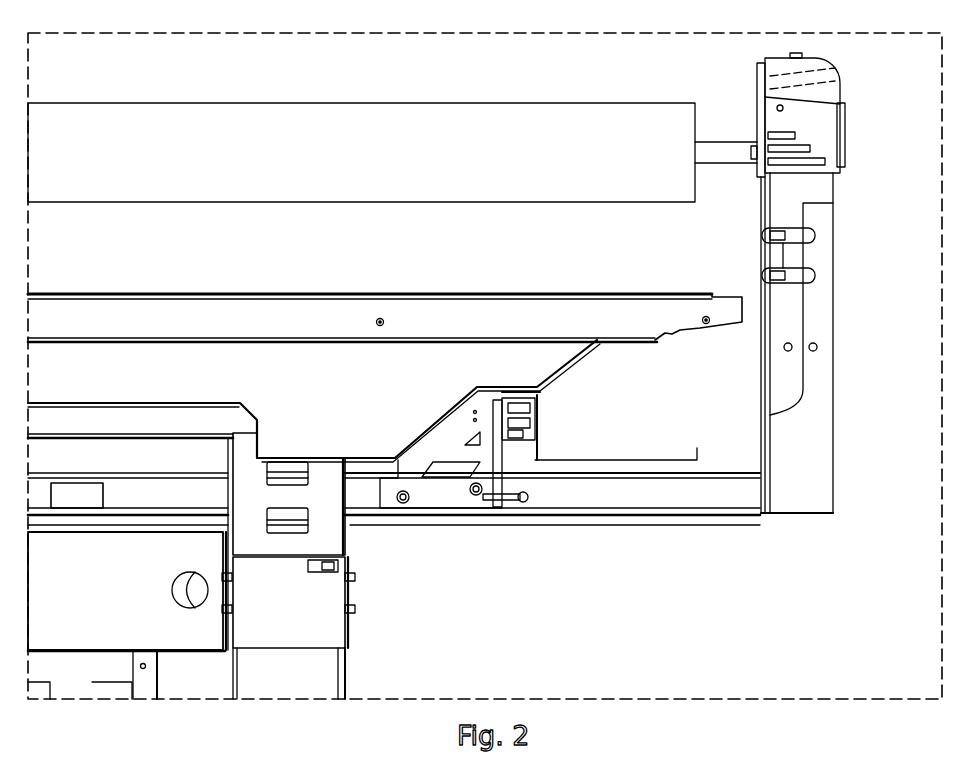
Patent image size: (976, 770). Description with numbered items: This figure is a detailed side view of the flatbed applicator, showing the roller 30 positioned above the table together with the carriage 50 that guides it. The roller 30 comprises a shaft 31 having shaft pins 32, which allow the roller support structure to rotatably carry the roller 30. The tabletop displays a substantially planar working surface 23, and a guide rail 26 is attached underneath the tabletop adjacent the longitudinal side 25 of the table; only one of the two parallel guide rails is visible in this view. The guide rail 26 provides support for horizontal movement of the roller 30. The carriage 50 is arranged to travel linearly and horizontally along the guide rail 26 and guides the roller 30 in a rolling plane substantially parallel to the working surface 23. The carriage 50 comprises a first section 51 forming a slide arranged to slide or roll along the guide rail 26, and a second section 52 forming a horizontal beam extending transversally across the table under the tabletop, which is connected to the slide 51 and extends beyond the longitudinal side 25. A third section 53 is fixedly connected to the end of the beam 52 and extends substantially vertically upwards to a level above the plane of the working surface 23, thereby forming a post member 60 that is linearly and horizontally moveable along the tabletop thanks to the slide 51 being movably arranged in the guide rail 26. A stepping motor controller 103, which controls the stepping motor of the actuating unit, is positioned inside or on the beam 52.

The roller 30 is at (266, 162).
The shaft 31 is at (712, 141).
The shaft pins 32 is at (746, 172).
The working surface 23 is at (391, 325).
The longitudinal side 25 is at (745, 304).
The guide rail 26 is at (563, 416).
The first section 51 is at (452, 436).
The second section 52 is at (207, 483).
The stepping motor controller 103 is at (77, 493).
The carriage 50 is at (466, 590).
The third section 53 is at (773, 283).
The post member 60 is at (773, 283).